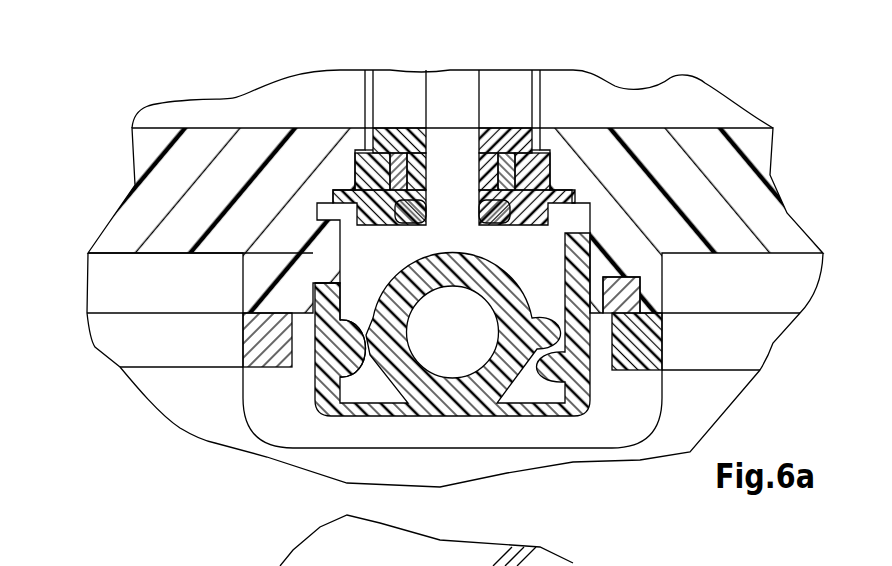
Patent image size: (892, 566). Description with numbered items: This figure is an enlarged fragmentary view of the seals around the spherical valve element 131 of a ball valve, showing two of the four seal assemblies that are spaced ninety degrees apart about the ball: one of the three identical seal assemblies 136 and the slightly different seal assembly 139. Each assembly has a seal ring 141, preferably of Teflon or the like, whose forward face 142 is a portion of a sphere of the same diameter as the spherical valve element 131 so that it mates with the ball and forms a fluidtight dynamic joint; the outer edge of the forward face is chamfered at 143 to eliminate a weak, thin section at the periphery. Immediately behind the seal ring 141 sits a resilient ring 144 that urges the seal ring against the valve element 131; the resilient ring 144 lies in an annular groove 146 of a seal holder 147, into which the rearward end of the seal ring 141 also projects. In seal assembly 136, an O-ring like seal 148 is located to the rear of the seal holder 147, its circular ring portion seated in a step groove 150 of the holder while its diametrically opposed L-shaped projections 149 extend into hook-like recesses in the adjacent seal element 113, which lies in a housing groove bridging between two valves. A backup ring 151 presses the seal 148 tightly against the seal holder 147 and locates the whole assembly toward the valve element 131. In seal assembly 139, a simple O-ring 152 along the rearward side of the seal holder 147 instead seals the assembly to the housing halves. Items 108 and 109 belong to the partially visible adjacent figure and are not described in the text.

The seal ring 141 is at (343, 187).
The seal assembly 139 is at (440, 87).
The chamfer 143 is at (296, 218).
The resilient ring 144 is at (424, 137).
The spherical valve element 131 is at (267, 245).
The seal holder 147 is at (380, 226).
The forward face 142 is at (295, 228).
The O-ring 152 is at (430, 224).
The annular groove 146 is at (88, 254).
The seal assembly 136 is at (226, 357).
The backup ring 151 is at (268, 366).
The seal element 113 is at (447, 401).
The O-ring like seal 148 is at (343, 292).
The L-shaped projections 149 is at (347, 363).
The step groove 150 is at (341, 286).
The body 109 is at (637, 565).
The wall 108 is at (480, 563).